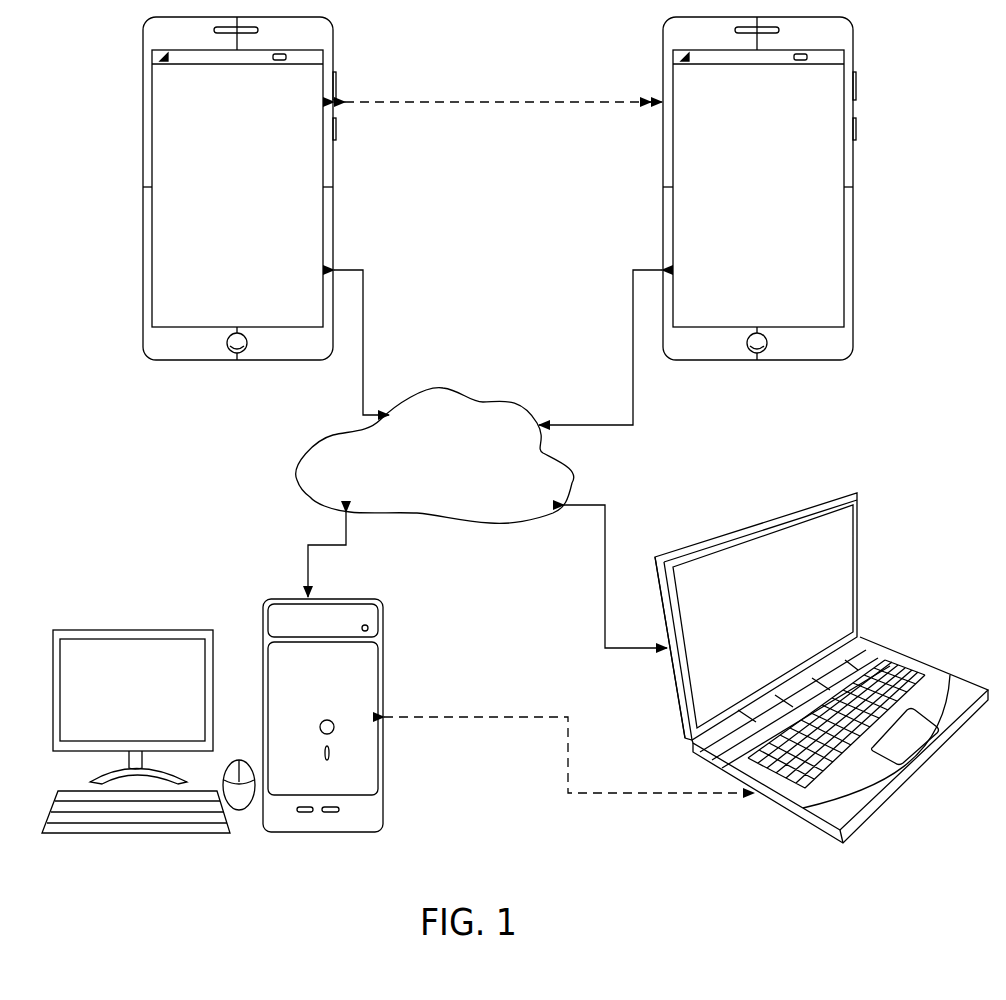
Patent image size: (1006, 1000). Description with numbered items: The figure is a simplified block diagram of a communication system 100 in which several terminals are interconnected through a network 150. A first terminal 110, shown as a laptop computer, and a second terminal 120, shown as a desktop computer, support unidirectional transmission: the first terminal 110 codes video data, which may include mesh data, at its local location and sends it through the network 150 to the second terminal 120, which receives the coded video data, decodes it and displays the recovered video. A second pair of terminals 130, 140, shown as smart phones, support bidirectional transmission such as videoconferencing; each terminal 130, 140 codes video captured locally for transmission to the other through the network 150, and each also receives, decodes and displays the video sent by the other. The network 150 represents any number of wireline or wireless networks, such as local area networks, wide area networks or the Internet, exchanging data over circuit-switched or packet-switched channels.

The communication system 100 is at (70, 82).
The first terminal 110 is at (857, 545).
The second terminal 120 is at (383, 797).
The terminal 130 is at (205, 188).
The terminal 140 is at (662, 127).
The network 150 is at (455, 451).